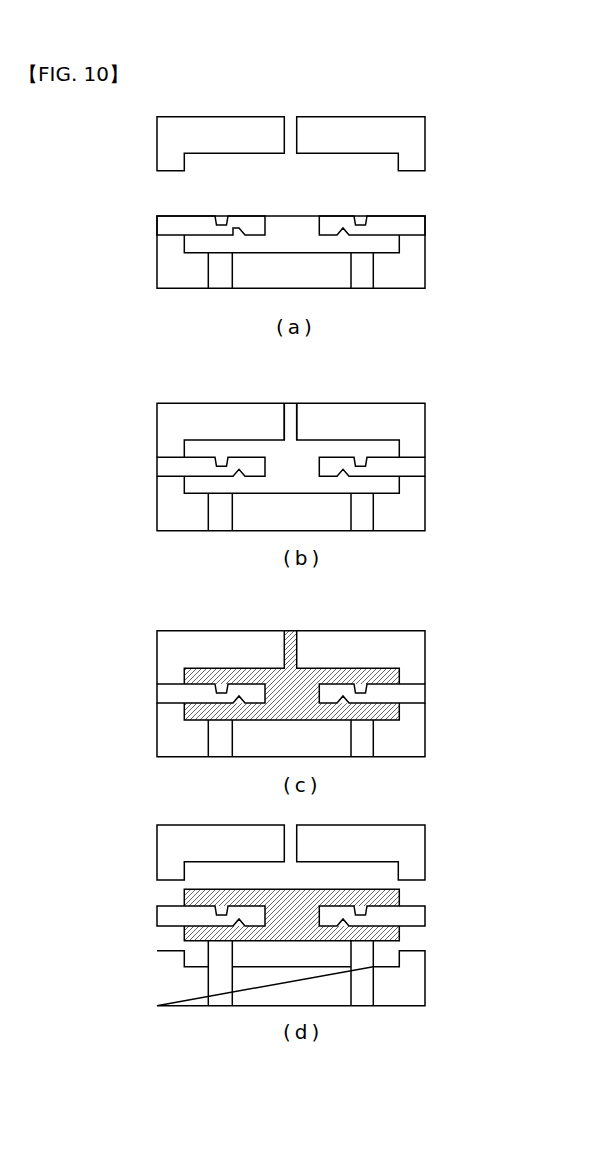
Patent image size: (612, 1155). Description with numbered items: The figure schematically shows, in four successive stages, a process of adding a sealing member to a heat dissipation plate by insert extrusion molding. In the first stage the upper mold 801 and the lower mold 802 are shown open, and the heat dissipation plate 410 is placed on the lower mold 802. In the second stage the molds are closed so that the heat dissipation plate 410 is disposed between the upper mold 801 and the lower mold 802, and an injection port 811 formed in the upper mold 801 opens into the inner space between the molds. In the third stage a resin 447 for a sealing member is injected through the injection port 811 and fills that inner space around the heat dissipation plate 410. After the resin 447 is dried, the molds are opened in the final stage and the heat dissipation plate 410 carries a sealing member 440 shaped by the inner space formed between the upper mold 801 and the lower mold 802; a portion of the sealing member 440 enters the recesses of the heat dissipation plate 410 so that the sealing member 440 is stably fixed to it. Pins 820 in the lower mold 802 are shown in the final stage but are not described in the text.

The upper mold 801 is at (157, 140).
The lower mold 802 is at (418, 272).
The heat dissipation plate 410 is at (413, 225).
The injection port 811 is at (288, 413).
The resin for a sealing member 447 is at (290, 640).
The sealing member 440 is at (183, 893).
The ejector pin 820 is at (222, 983).